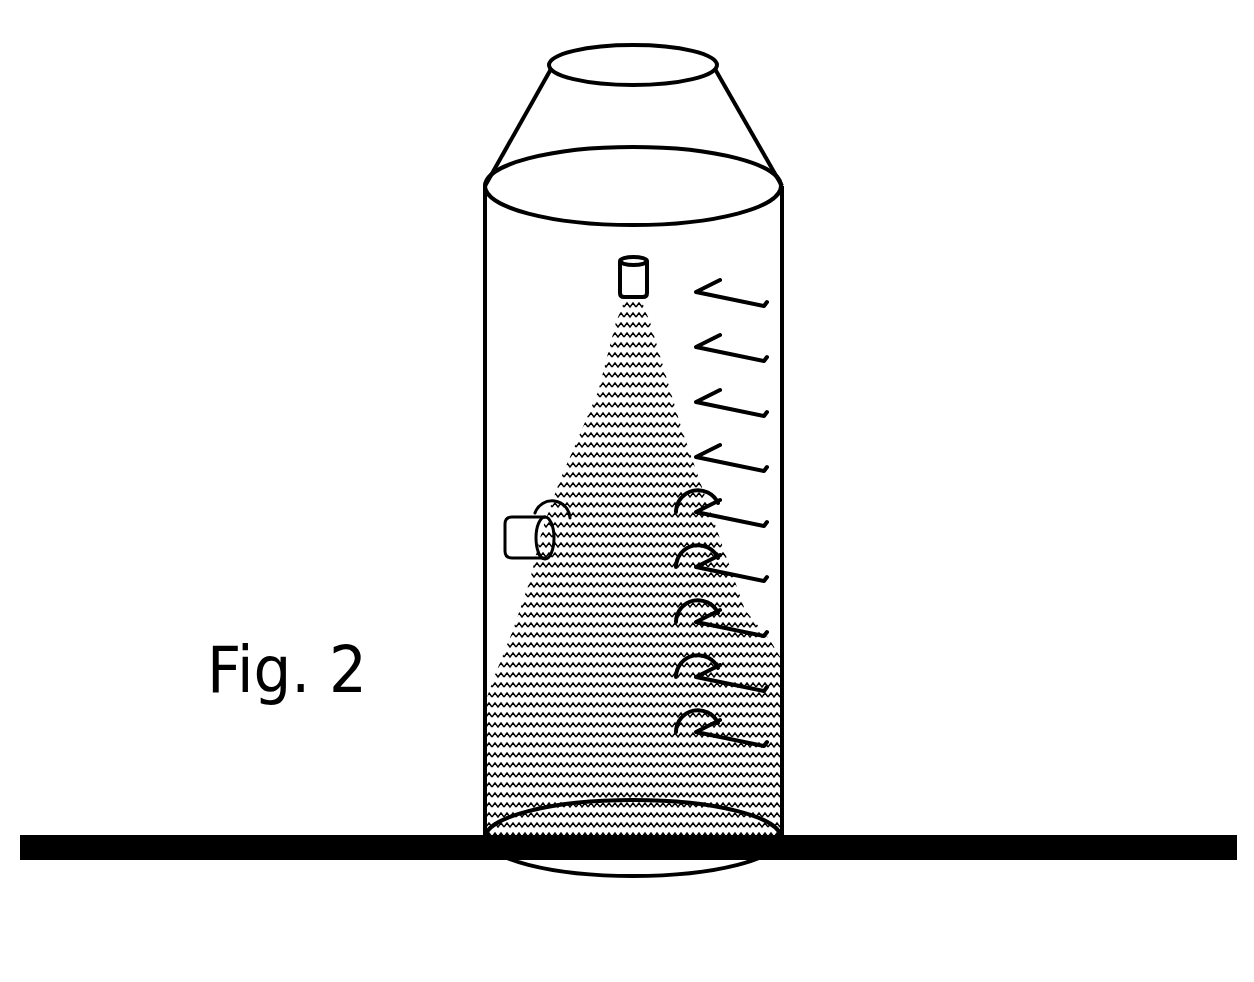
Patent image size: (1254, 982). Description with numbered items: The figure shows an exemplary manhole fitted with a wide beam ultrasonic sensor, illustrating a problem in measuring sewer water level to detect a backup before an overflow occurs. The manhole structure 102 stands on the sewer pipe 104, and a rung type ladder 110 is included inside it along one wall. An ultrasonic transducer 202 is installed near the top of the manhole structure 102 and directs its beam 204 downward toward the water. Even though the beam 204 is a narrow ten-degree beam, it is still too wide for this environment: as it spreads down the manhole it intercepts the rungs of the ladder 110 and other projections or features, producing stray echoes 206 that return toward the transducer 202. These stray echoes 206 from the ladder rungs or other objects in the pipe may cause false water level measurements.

The manhole structure 102 is at (782, 212).
The sewer pipe 104 is at (1017, 833).
The rung type ladder 110 is at (727, 468).
The ultrasonic transducer 202 is at (647, 275).
The beam 204 is at (620, 392).
The stray echoes 206 is at (537, 510).